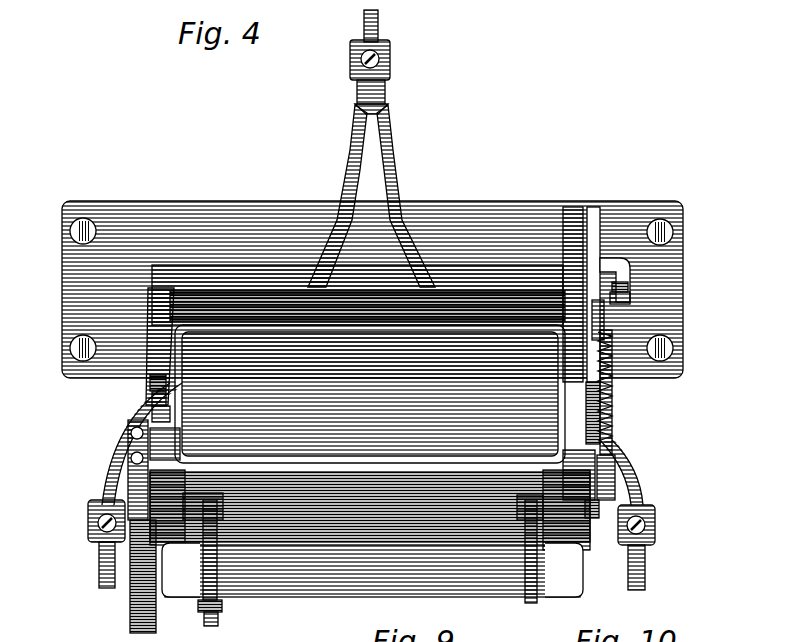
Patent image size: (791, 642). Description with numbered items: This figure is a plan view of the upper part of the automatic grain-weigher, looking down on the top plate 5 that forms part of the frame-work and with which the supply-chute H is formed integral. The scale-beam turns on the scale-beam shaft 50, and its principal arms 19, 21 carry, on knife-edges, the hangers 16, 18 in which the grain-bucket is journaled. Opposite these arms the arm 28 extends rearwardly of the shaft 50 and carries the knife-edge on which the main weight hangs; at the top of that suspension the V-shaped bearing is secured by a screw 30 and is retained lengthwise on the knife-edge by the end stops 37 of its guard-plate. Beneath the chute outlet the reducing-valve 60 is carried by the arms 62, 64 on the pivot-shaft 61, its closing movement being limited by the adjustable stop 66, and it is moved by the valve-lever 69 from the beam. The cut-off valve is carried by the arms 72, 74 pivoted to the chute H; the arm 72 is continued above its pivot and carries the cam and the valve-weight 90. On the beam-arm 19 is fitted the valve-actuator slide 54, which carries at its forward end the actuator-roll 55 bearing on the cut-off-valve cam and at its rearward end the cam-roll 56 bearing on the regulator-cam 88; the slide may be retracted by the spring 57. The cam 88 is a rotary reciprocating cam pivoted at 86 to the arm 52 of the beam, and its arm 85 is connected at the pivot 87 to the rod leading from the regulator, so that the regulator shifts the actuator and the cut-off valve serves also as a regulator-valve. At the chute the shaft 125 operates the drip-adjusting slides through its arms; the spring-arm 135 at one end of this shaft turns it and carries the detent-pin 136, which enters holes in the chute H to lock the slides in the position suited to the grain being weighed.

The top plate 5 is at (62, 268).
The scale-beam shaft 50 is at (355, 335).
The guard-plate ends 37 is at (352, 58).
The screw 30 is at (391, 58).
The arm 28 is at (393, 130).
The arm of the scale-beam 52 is at (578, 216).
The pivot 86 is at (608, 214).
The cam arm 85 is at (632, 270).
The regulator-cam 88 is at (628, 283).
The pivot 87 is at (625, 300).
The cam-roll 56 is at (604, 318).
The valve-actuator slide 54 is at (612, 456).
The supply-chute H is at (614, 398).
The spring 57 is at (596, 395).
The valve-weight 90 is at (575, 470).
The actuator-roll 55 is at (616, 486).
The cut-off-valve arm 72 is at (592, 520).
The principal arm of the scale-beam 19 is at (626, 470).
The hanger 16 is at (645, 567).
The detent-pin 136 is at (152, 382).
The spring-arm 135 is at (152, 398).
The shaft 125 is at (152, 416).
The cut-off-valve arm 74 is at (152, 446).
The principal arm of the scale-beam 21 is at (106, 478).
The hanger 18 is at (98, 558).
The valve-lever 69 is at (156, 612).
The pivot-shaft 61 is at (376, 508).
The reducing-valve 60 is at (340, 597).
The reducing-valve arm 64 is at (222, 578).
The stop 66 is at (218, 620).
The reducing-valve arm 62 is at (530, 603).